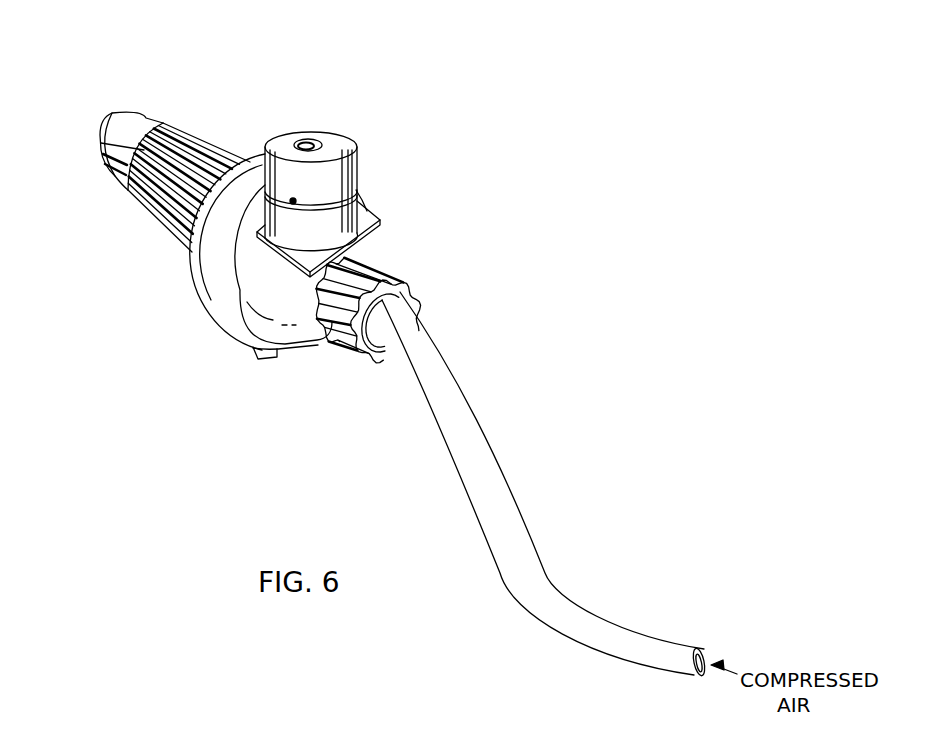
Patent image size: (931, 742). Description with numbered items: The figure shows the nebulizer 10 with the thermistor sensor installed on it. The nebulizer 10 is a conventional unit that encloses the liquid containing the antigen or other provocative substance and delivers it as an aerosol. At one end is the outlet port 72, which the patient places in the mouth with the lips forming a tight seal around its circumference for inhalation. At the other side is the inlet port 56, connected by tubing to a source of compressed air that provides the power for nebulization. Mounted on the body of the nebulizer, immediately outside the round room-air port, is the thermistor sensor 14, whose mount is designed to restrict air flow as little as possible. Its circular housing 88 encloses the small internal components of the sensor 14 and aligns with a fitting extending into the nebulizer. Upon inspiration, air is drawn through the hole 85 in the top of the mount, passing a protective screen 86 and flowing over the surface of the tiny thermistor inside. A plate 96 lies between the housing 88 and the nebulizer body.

The nebulizer 10 is at (195, 278).
The sensor 14 is at (331, 114).
The inlet port 56 is at (374, 345).
The outlet port 72 is at (105, 140).
The hole 85 is at (297, 146).
The screen 86 is at (326, 147).
The circular housing 88 is at (326, 185).
The mounting plate 96 is at (383, 222).